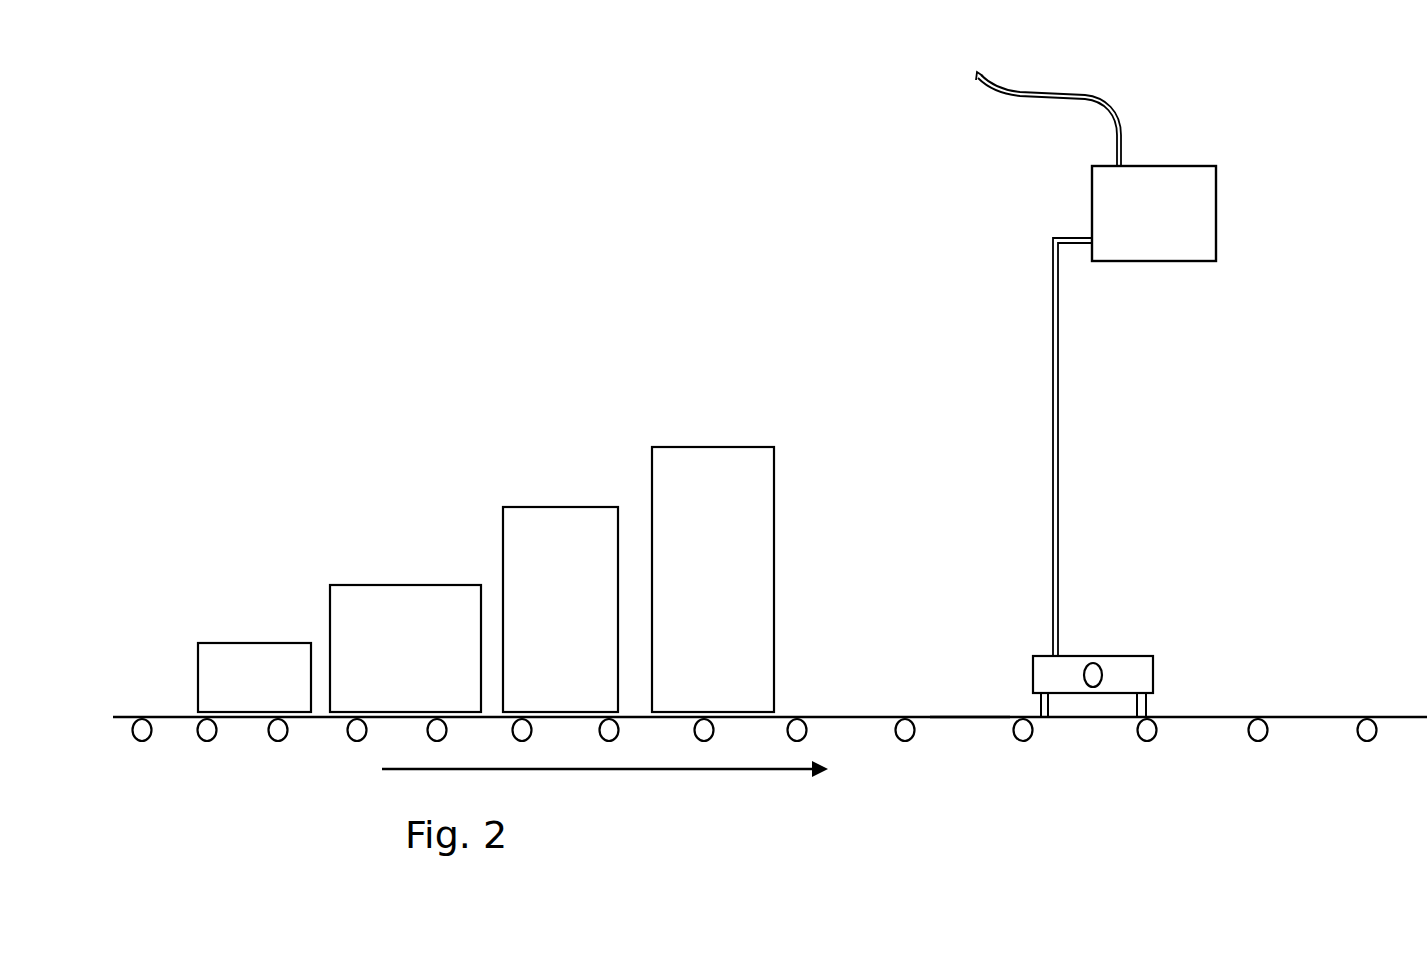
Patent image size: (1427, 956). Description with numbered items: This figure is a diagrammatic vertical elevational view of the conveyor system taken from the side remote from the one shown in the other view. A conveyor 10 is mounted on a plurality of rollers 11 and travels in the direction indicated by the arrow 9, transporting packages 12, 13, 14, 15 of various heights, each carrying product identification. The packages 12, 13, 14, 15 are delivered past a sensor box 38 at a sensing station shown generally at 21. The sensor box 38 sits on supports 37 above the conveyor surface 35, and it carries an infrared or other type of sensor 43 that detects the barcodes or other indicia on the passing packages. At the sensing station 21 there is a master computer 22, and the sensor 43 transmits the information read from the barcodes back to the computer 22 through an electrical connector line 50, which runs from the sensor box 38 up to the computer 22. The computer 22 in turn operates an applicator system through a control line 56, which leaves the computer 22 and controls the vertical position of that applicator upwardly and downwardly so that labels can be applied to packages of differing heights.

The arrow 9 is at (673, 770).
The conveyor 10 is at (165, 717).
The rollers 11 is at (272, 736).
The package 12 is at (674, 462).
The package 13 is at (541, 525).
The package 14 is at (393, 603).
The package 15 is at (228, 665).
The sensing station 21 is at (1108, 437).
The master computer 22 is at (1186, 173).
The conveyor surface 35 is at (968, 718).
The supports 37 is at (1137, 712).
The sensor box 38 is at (1143, 679).
The sensor 43 is at (1090, 675).
The electrical connector line 50 is at (1058, 335).
The control line 56 is at (1092, 100).